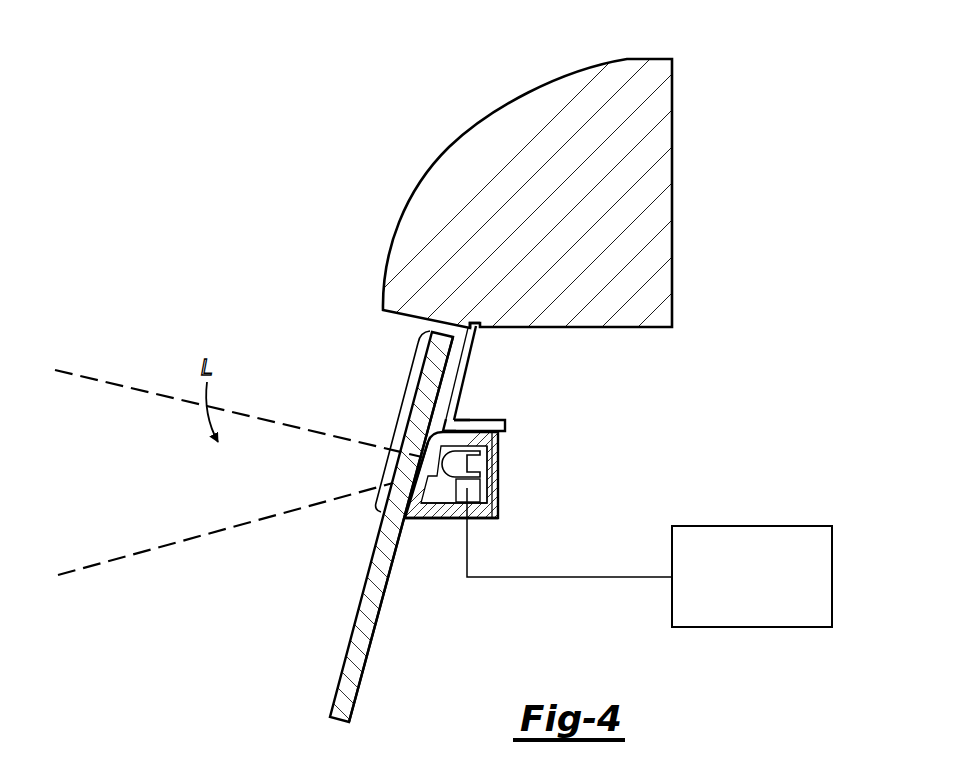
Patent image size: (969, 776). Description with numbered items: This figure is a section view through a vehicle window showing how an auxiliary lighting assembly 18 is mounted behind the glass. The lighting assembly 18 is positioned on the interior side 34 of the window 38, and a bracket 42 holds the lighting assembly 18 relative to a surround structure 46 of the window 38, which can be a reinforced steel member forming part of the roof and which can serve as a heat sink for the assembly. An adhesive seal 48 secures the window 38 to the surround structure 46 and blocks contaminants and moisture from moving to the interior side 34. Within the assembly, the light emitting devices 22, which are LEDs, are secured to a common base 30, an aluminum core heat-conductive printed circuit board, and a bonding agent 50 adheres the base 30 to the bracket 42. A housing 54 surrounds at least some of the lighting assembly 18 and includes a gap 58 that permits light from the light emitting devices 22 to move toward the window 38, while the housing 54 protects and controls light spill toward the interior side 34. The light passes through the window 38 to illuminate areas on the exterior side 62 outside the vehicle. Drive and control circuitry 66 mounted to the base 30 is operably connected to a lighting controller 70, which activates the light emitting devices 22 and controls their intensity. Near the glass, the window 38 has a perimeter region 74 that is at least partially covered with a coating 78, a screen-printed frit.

The lighting assembly 18 is at (446, 491).
The light emitting devices 22 is at (466, 461).
The base 30 is at (481, 500).
The interior side 34 is at (431, 681).
The window 38 is at (343, 662).
The bracket 42 is at (500, 440).
The surround structure 46 is at (463, 377).
The adhesive seal 48 is at (452, 352).
The bonding agent 50 is at (482, 479).
The housing 54 is at (482, 527).
The gap 58 is at (414, 462).
The exterior side 62 is at (236, 593).
The drive and control circuitry 66 is at (463, 497).
The lighting controller 70 is at (769, 527).
The perimeter region 74 is at (392, 420).
The coating 78 is at (447, 419).